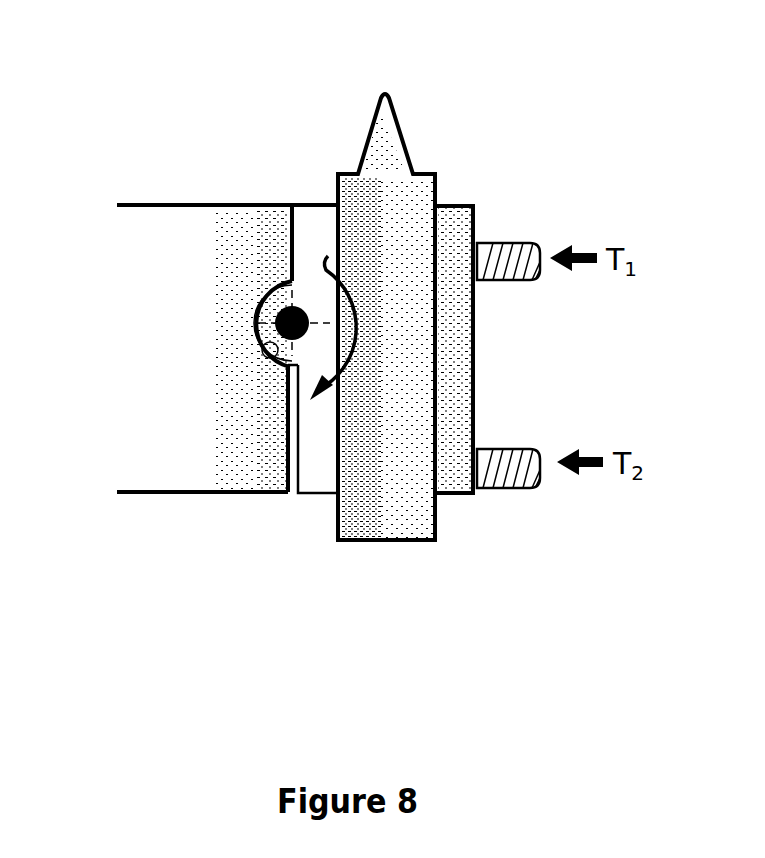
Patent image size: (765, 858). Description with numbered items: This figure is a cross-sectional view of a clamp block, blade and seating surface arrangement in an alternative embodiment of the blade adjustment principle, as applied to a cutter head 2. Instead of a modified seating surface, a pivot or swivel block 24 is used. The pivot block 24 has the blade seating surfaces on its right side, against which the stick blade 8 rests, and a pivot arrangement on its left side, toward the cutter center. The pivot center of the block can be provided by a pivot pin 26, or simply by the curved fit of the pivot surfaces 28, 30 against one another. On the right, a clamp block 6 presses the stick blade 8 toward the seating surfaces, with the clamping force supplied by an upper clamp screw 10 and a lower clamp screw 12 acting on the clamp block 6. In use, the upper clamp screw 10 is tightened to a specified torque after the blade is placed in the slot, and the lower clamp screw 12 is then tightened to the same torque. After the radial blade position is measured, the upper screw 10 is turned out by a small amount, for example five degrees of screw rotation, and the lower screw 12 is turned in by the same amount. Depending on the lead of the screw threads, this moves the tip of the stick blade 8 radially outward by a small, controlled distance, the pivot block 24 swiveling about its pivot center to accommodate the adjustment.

The cutter head 2 is at (215, 473).
The clamp block 6 is at (463, 225).
The stick blade 8 is at (405, 123).
The upper clamp screw 10 is at (502, 283).
The lower clamp screw 12 is at (505, 445).
The pivot block 24 is at (307, 207).
The pivot pin 26 is at (266, 310).
The pivot surface 28 is at (250, 337).
The pivot surface 30 is at (263, 368).